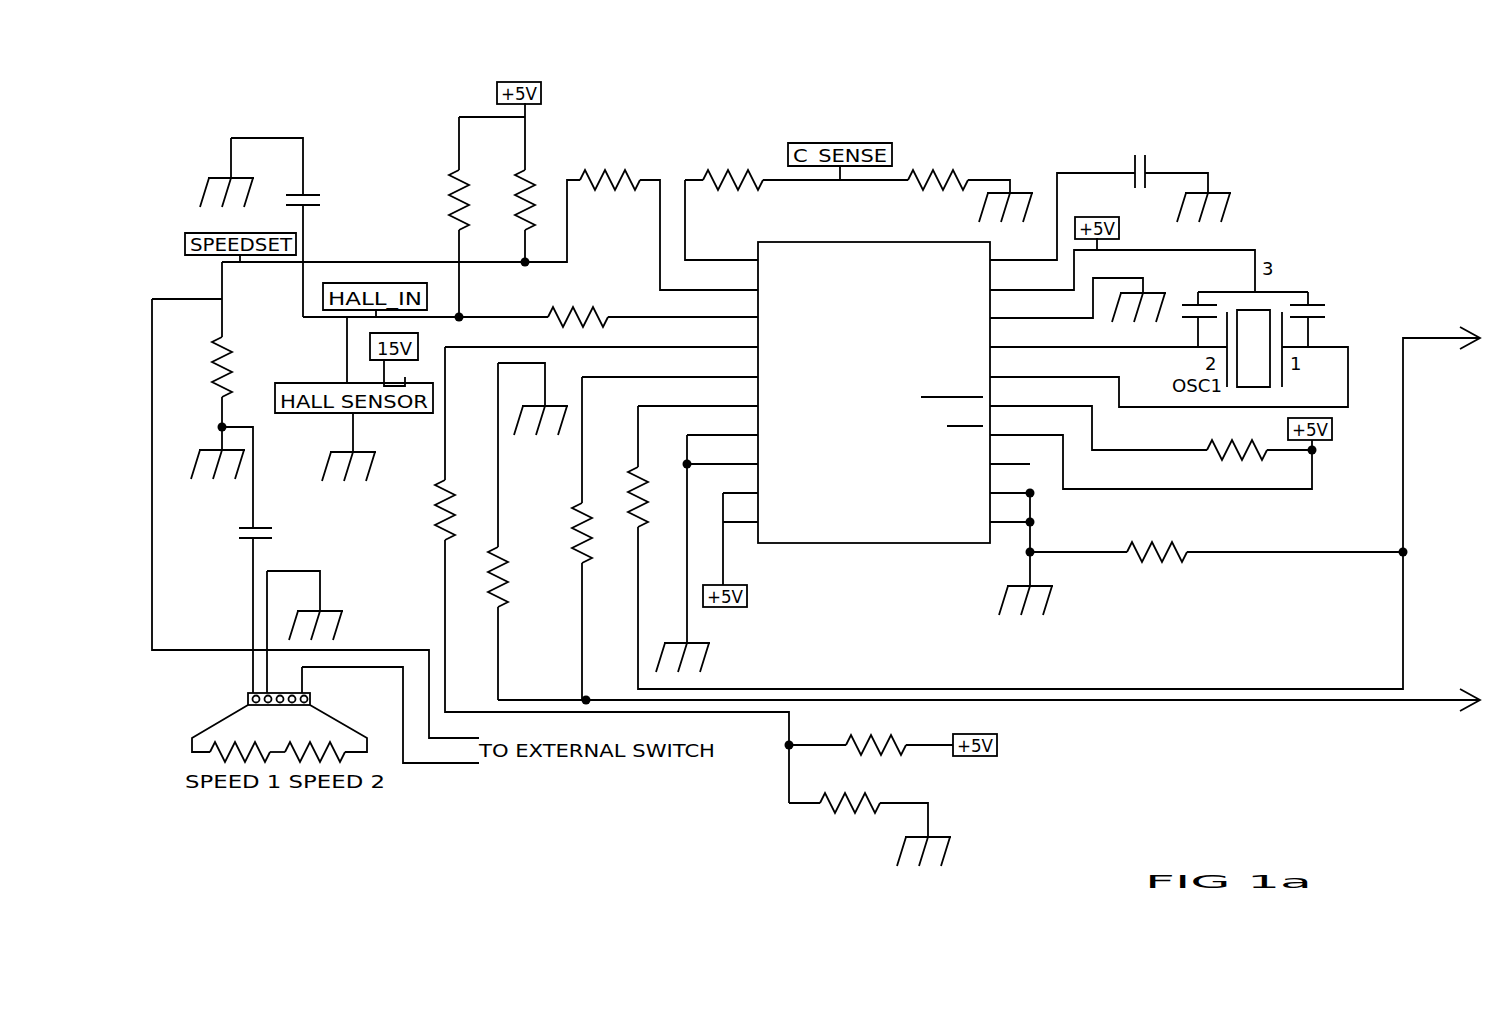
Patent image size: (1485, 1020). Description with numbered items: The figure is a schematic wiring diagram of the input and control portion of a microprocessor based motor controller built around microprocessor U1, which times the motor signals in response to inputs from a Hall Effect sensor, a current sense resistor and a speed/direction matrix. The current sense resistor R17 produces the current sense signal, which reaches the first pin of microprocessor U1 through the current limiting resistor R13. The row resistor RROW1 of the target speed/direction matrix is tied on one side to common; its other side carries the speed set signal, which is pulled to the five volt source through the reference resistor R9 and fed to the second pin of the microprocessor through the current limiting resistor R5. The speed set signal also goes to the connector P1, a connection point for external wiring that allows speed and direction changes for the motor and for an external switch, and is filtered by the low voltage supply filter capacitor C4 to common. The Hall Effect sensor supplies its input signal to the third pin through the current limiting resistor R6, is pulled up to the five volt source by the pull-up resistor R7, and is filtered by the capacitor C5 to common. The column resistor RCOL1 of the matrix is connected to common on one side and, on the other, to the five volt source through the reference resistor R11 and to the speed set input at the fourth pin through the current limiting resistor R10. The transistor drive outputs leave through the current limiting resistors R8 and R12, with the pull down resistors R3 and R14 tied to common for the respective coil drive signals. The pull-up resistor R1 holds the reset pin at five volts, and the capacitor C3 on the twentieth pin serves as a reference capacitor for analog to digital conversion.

The filter capacitor C5 is at (260, 227).
The pull-up resistor R7 is at (449, 217).
The reference resistor R9 is at (519, 172).
The current limiting resistor R5 is at (669, 218).
The current limiting resistor R13 is at (733, 168).
The current sense resistor R17 is at (938, 168).
The reference capacitor C3 is at (1110, 203).
The row resistor RROW1 is at (243, 370).
The current limiting resistor R6 is at (578, 305).
The low voltage supply filter capacitor C4 is at (249, 521).
The current limiting resistor R10 is at (429, 443).
The pull down resistor R3 is at (488, 576).
The current limiting resistor R8 is at (573, 470).
The current limiting resistor R12 is at (622, 466).
The microprocessor U1 is at (876, 380).
The connector P1 is at (279, 724).
The pull-up resistor R1 is at (1237, 438).
The pull down resistor R14 is at (1157, 540).
The reference resistor R11 is at (876, 732).
The column resistor RCOL1 is at (858, 790).